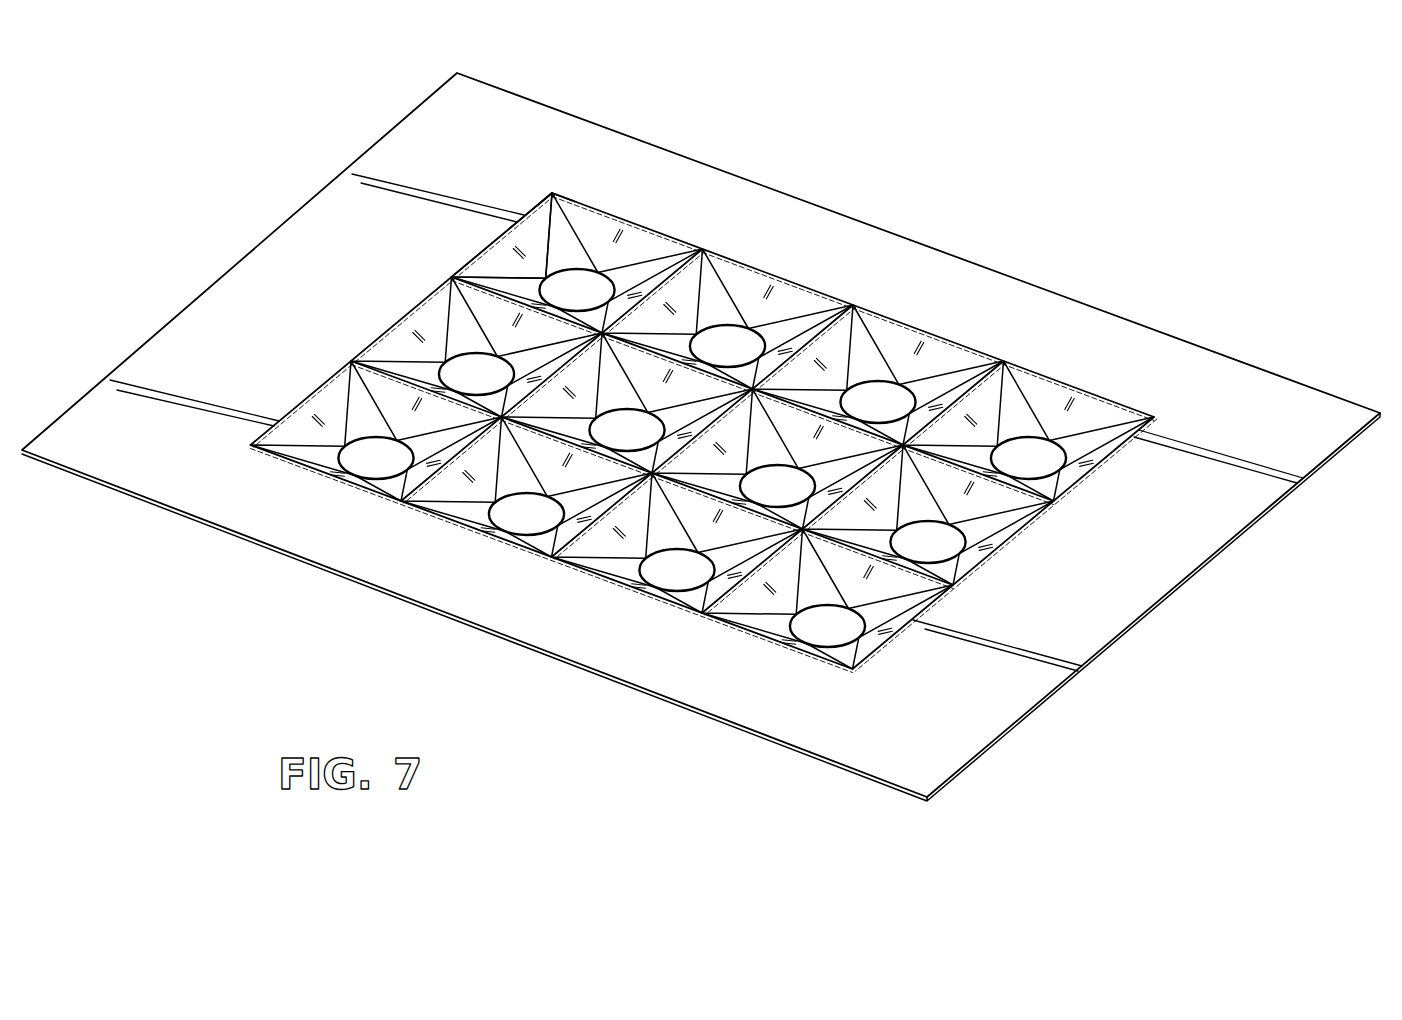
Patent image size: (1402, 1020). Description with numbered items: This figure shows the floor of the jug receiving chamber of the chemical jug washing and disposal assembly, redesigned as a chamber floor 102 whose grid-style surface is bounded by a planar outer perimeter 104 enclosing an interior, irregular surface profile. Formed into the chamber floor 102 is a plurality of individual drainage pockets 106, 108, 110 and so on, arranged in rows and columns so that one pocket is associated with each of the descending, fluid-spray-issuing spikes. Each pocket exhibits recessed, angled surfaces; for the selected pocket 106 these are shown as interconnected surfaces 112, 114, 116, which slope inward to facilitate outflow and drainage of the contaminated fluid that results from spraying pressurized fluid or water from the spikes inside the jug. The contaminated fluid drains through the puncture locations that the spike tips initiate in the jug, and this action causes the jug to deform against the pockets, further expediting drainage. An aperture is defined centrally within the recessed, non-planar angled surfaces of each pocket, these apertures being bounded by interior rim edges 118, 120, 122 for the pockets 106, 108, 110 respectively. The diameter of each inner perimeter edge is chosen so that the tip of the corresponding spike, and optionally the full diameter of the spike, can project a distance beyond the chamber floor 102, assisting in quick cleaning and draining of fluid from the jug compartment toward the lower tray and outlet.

The chamber floor 102 is at (984, 174).
The planar outer perimeter 104 is at (1138, 343).
The drainage pocket 106 is at (588, 233).
The drainage pocket 108 is at (447, 324).
The drainage pocket 110 is at (339, 413).
The interconnected angled surface 112 is at (552, 193).
The interconnected angled surface 114 is at (533, 245).
The interconnected angled surface 116 is at (510, 282).
The interior rim edge 118 is at (600, 283).
The interior rim edge 120 is at (452, 364).
The interior rim edge 122 is at (344, 462).